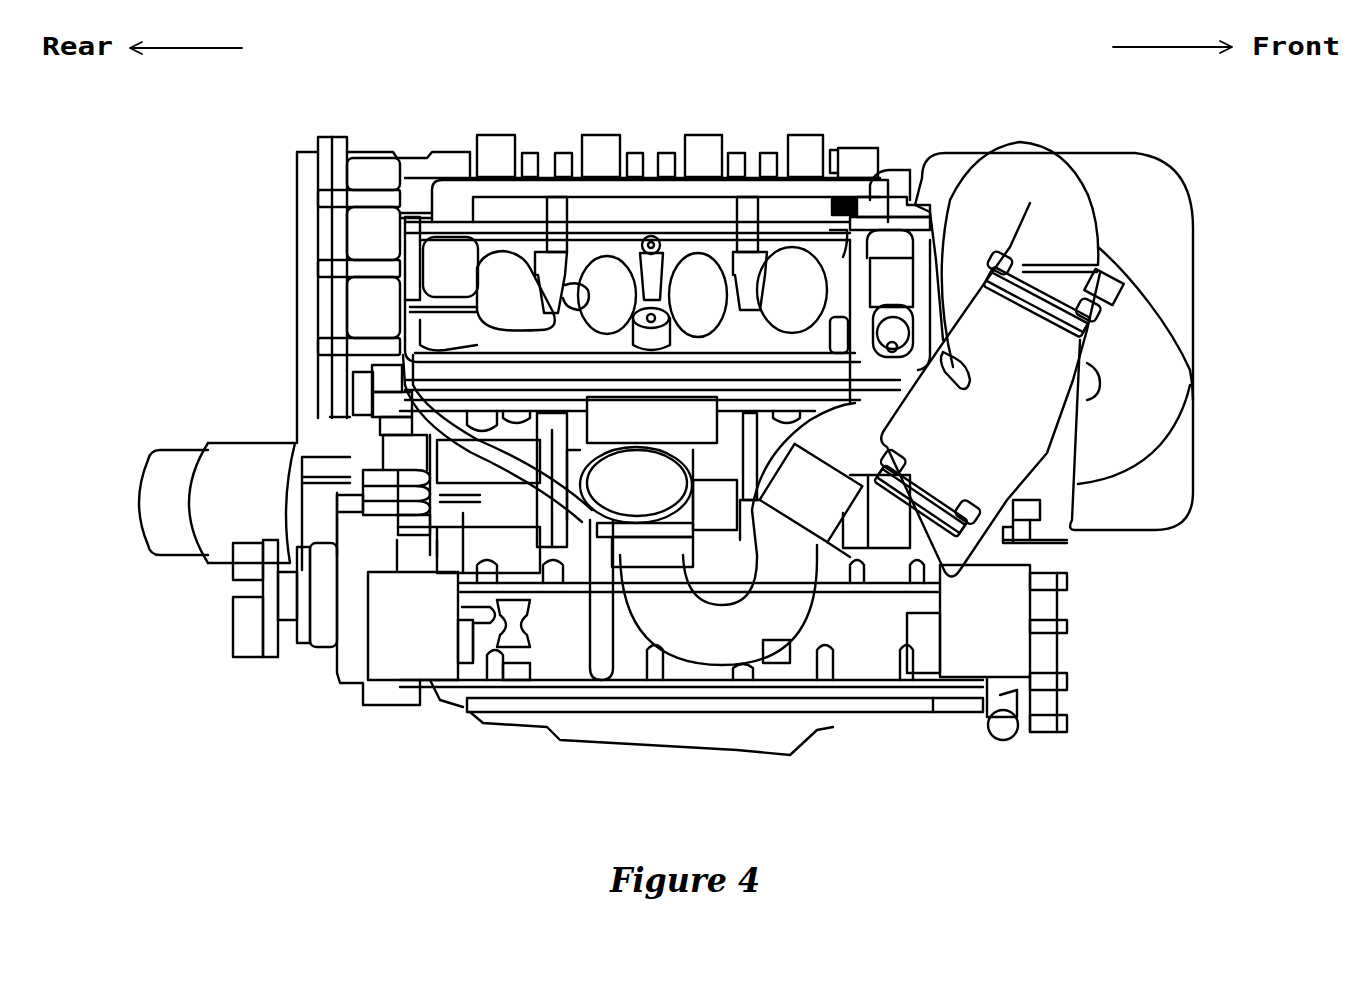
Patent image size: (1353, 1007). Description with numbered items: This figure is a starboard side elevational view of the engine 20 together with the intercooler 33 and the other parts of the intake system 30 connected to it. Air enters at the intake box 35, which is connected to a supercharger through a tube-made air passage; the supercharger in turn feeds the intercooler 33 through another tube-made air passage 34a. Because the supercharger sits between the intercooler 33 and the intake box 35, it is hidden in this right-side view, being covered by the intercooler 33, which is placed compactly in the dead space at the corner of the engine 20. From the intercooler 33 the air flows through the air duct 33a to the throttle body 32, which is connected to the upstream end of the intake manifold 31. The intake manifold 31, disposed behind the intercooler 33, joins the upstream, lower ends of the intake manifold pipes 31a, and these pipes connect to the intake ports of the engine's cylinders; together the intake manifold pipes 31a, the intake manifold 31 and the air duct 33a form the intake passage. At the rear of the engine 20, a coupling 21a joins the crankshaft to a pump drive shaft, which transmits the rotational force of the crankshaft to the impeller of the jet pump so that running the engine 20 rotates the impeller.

The engine 20 is at (425, 123).
The coupling 21a is at (252, 647).
The intake system 30 is at (1140, 116).
The intake manifold 31 is at (840, 372).
The intake manifold pipes 31a is at (733, 312).
The throttle body 32 is at (634, 467).
The intercooler 33 is at (1057, 403).
The air duct 33a is at (800, 614).
The air passage 34a is at (1018, 158).
The intake box 35 is at (1175, 235).